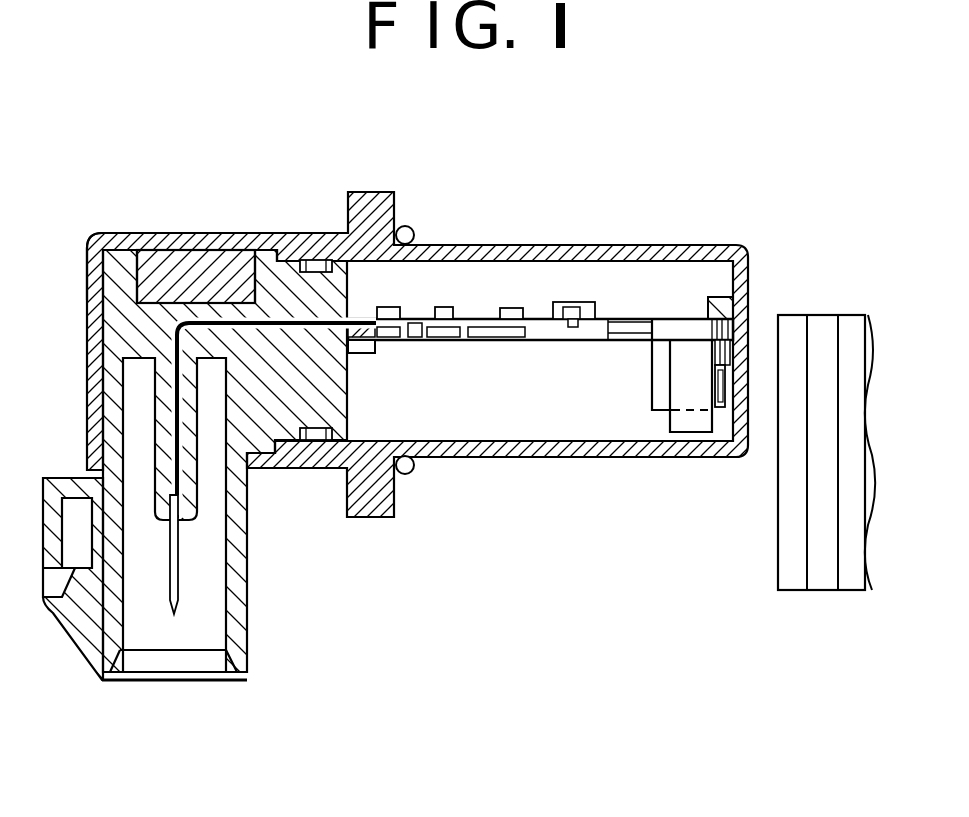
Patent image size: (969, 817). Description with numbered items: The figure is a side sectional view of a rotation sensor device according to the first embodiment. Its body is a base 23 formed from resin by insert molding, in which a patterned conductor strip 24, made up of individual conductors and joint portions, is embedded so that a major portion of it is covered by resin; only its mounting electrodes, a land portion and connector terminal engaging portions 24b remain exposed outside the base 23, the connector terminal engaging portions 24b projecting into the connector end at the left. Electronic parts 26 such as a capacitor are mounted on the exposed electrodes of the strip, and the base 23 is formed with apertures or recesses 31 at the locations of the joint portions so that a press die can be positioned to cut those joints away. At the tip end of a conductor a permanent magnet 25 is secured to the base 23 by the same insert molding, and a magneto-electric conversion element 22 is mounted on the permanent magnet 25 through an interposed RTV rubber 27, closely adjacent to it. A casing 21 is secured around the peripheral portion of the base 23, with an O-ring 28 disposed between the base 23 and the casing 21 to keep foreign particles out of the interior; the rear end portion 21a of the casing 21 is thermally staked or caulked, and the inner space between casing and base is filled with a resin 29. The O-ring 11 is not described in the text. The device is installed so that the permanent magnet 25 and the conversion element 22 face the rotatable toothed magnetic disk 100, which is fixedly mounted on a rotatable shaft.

The O-ring 11 is at (414, 472).
The casing 21 is at (627, 246).
The rear end portion 21a is at (89, 238).
The magneto-electric conversion element 22 is at (728, 390).
The base 23 is at (688, 318).
The patterned conductor strip 24 is at (348, 360).
The connector terminal engaging portions 24b is at (182, 583).
The permanent magnet 25 is at (683, 434).
The electronic parts 26 is at (553, 302).
The RTV rubber 27 is at (711, 440).
The O-ring 28 is at (312, 442).
The resin 29 is at (184, 270).
The apertures or recesses 31 is at (512, 341).
The rotatable toothed magnetic disk 100 is at (800, 315).